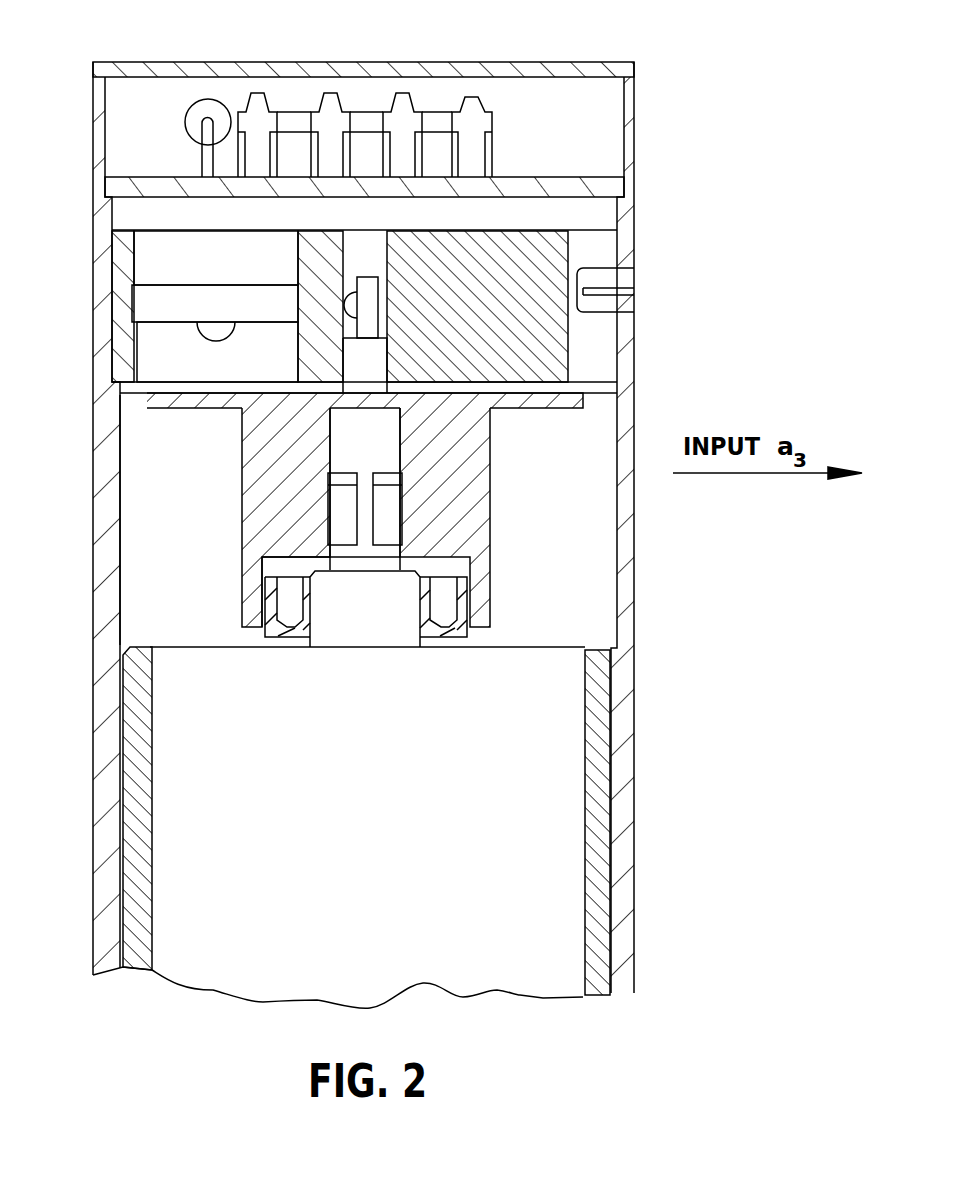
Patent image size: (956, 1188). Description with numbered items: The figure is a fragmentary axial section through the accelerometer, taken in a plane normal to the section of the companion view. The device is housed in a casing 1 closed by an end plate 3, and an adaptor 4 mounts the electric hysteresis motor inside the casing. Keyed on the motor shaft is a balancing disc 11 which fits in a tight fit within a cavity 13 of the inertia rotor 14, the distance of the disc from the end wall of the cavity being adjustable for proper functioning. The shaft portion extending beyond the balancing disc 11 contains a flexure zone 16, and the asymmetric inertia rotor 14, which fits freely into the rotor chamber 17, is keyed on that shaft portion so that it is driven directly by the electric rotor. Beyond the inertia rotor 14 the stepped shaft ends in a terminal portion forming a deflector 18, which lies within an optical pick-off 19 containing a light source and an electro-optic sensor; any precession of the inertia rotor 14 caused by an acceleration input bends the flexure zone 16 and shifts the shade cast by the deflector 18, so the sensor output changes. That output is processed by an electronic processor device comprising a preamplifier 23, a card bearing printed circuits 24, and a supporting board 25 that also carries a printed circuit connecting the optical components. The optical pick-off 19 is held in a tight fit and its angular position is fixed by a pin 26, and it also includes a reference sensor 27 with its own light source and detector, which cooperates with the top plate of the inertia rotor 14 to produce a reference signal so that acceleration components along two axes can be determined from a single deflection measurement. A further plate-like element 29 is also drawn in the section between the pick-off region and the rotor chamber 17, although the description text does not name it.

The casing 1 is at (623, 842).
The end plate 3 is at (415, 72).
The adaptor 4 is at (600, 773).
The balancing disc 11 is at (463, 636).
The cavity 13 is at (272, 570).
The inertia rotor 14 is at (467, 477).
The flexure zone 16 is at (367, 513).
The rotor chamber 17 is at (140, 482).
The deflector 18 is at (345, 277).
The optical pick-off 19 is at (503, 240).
The preamplifier 23 is at (190, 110).
The card bearing printed circuits 24 is at (331, 105).
The supporting board 25 is at (615, 190).
The pin 26 is at (623, 278).
The reference sensor 27 is at (147, 305).
The plate 29 is at (142, 402).